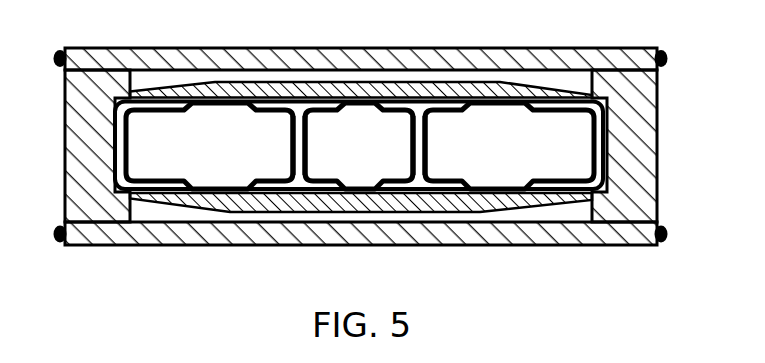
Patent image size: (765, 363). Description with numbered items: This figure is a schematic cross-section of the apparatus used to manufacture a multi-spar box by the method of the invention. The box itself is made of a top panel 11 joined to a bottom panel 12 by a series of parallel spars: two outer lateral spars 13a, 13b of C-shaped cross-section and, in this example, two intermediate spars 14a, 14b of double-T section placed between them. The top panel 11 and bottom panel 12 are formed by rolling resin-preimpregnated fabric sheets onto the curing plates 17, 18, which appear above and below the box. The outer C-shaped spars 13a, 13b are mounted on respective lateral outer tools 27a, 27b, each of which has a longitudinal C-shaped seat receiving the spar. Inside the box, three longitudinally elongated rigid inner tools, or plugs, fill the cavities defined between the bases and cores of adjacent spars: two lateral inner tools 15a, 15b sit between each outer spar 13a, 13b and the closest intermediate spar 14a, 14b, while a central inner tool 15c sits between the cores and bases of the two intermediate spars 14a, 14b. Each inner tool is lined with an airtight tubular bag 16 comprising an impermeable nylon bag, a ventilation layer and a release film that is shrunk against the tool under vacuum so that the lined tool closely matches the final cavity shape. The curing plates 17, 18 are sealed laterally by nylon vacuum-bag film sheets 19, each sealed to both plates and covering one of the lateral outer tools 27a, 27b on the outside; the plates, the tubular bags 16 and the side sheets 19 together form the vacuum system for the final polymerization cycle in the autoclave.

The top panel 11 is at (292, 88).
The bottom panel 12 is at (388, 208).
The outer lateral spar 13a is at (79, 179).
The outer lateral spar 13b is at (646, 180).
The intermediate spar 14a is at (303, 192).
The intermediate spar 14b is at (455, 198).
The lateral inner tool 15a is at (152, 205).
The lateral inner tool 15b is at (550, 205).
The central inner tool 15c is at (418, 196).
The tubular bag 16 is at (361, 38).
The curing plate 17 is at (224, 228).
The curing plate 18 is at (461, 58).
The vacuum-bag film sheet 19 is at (58, 105).
The lateral outer tool 27a is at (78, 153).
The lateral outer tool 27b is at (644, 158).